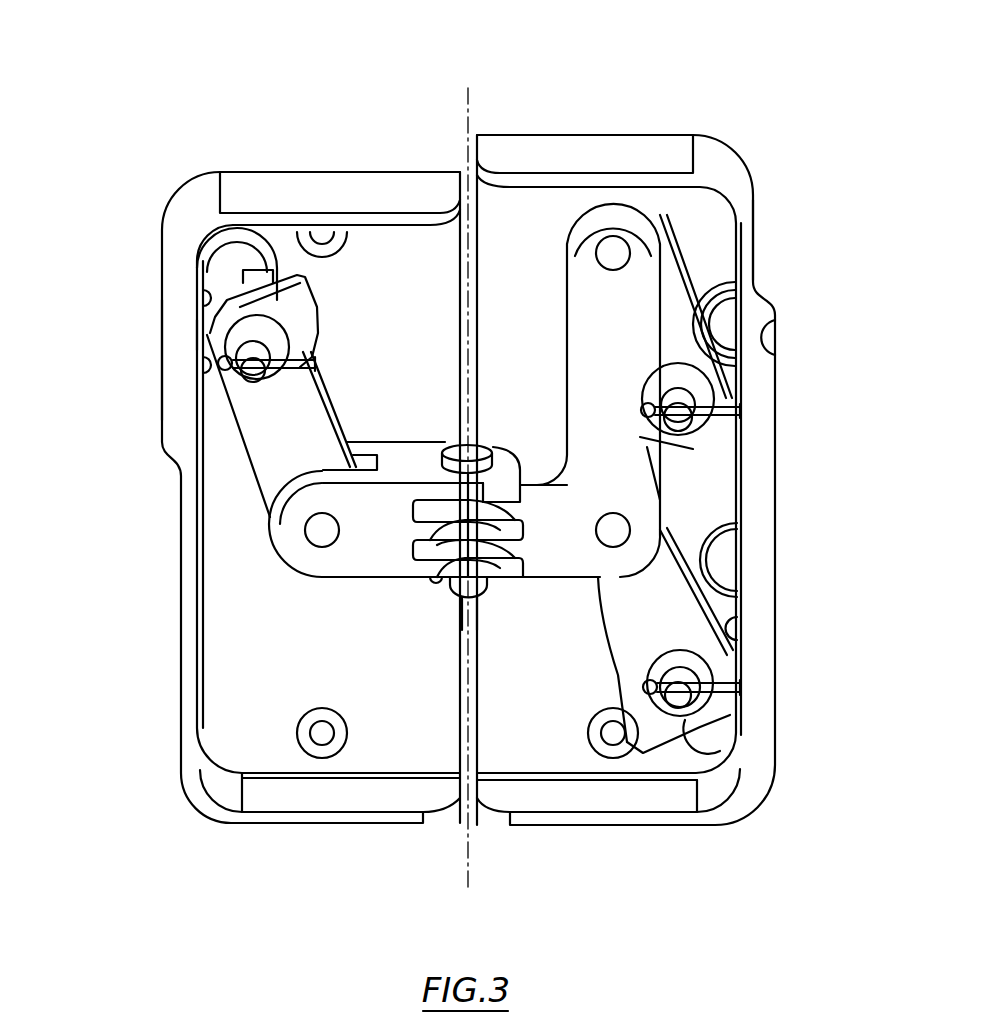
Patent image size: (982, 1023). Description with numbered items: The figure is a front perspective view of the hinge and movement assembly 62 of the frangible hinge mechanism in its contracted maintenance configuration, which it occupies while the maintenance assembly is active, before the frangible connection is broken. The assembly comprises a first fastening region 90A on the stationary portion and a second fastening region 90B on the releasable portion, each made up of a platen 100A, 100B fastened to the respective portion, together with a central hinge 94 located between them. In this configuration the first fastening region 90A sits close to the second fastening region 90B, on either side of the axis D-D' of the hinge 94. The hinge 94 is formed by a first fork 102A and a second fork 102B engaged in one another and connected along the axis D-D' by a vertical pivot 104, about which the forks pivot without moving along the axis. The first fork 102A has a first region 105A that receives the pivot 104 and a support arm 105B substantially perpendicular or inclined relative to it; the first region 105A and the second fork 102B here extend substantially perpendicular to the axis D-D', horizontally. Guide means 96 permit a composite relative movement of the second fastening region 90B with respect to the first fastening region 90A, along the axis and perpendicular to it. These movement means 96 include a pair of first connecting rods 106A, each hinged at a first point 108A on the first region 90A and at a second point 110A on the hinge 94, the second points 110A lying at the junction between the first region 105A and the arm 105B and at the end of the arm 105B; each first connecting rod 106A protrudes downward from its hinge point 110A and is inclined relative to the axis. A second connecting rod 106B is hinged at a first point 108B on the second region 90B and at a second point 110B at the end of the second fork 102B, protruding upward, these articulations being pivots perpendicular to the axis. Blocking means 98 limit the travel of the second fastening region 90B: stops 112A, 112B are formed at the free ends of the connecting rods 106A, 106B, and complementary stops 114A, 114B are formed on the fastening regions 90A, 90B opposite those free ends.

The hinge and movement assembly 62 is at (517, 85).
The first fastening region 90A is at (740, 130).
The second fastening region 90B is at (172, 175).
The central hinge 94 is at (498, 438).
The guide means 96 is at (328, 617).
The blocking means 98 is at (195, 335).
The platen 100A is at (746, 257).
The platen 100B is at (175, 420).
The first fork 102A is at (478, 612).
The second fork 102B is at (373, 548).
The pivot 104 is at (447, 447).
The first region 105A is at (547, 527).
The support arm 105B is at (590, 352).
The first connecting rod 106A is at (673, 325).
The second connecting rod 106B is at (270, 433).
The first point 108A is at (712, 437).
The first point 108B is at (200, 395).
The second point 110A is at (613, 250).
The second point 110B is at (322, 535).
The stop 112A is at (663, 447).
The stop 112B is at (267, 290).
The complementary stop 114A is at (735, 328).
The complementary stop 114B is at (195, 288).